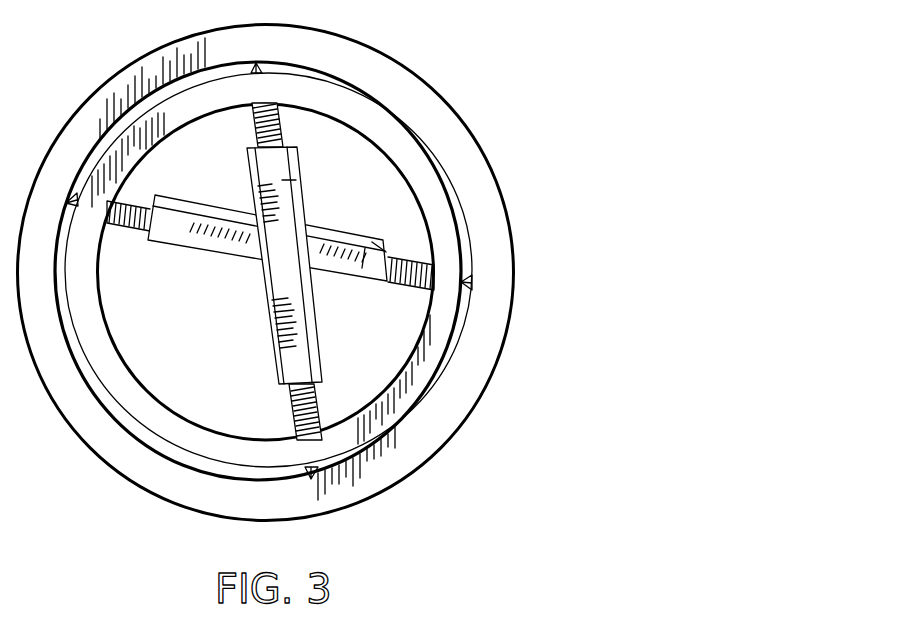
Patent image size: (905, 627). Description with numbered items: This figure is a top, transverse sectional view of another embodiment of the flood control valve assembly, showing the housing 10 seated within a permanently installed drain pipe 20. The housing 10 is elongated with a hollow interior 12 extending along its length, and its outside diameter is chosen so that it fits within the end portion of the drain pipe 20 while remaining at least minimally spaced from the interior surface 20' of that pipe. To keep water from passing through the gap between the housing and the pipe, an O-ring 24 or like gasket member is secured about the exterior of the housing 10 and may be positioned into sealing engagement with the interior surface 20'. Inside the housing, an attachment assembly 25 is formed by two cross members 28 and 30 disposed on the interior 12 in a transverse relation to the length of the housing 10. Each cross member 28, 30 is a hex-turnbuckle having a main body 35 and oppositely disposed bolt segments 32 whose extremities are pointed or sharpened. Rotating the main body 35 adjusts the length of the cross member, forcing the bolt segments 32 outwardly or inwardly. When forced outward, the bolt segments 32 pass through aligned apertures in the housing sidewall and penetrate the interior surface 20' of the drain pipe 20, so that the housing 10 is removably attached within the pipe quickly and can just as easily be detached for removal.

The housing 10 is at (309, 260).
The hollow interior 12 is at (186, 332).
The drain pipe 20 is at (309, 260).
The interior surface 20' is at (350, 269).
The O-ring 24 is at (468, 245).
The attachment assembly 25 is at (270, 271).
The cross member 28 is at (282, 265).
The cross member 30 is at (372, 267).
The bolt segments 32 is at (290, 420).
The main body 35 is at (277, 347).